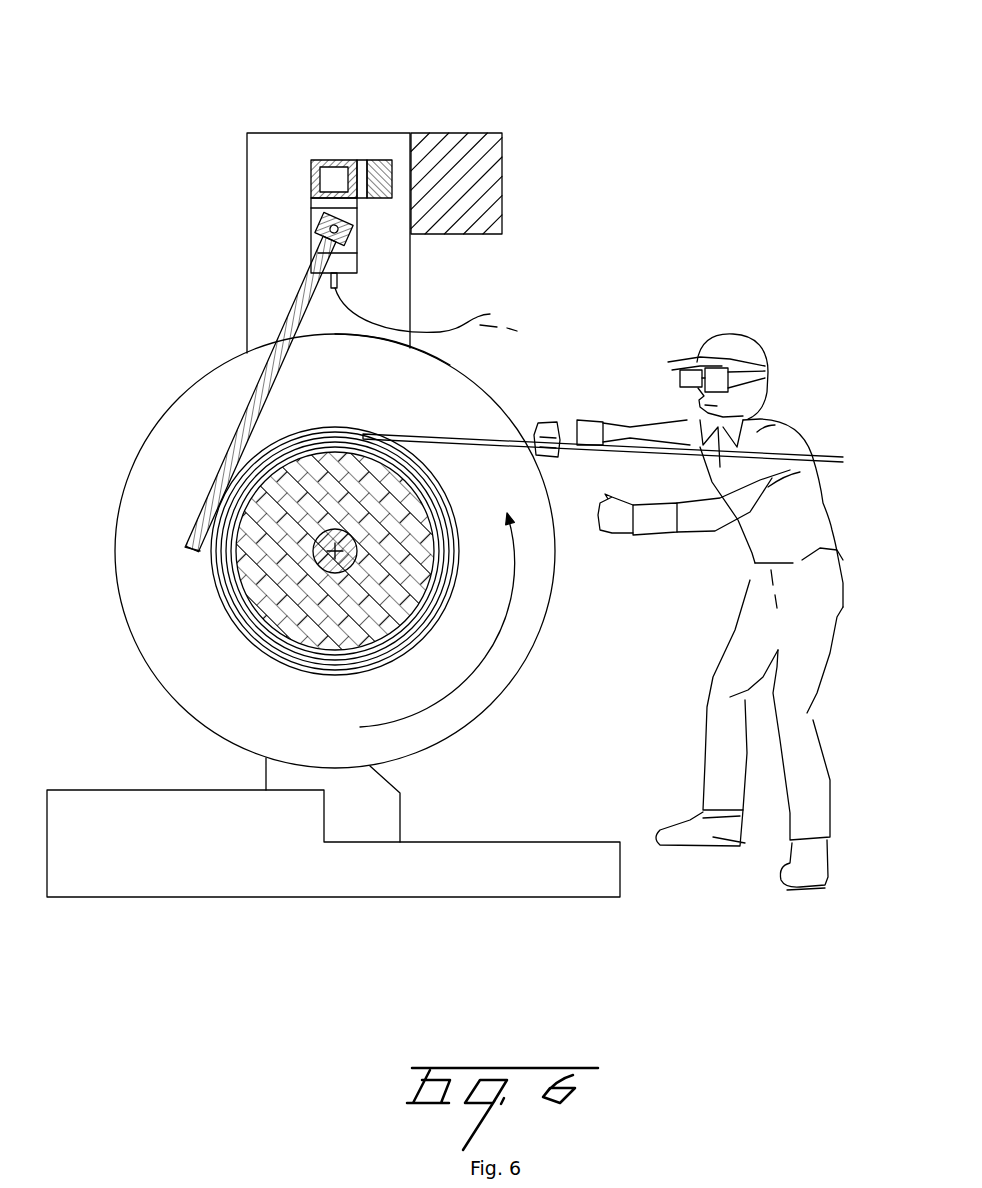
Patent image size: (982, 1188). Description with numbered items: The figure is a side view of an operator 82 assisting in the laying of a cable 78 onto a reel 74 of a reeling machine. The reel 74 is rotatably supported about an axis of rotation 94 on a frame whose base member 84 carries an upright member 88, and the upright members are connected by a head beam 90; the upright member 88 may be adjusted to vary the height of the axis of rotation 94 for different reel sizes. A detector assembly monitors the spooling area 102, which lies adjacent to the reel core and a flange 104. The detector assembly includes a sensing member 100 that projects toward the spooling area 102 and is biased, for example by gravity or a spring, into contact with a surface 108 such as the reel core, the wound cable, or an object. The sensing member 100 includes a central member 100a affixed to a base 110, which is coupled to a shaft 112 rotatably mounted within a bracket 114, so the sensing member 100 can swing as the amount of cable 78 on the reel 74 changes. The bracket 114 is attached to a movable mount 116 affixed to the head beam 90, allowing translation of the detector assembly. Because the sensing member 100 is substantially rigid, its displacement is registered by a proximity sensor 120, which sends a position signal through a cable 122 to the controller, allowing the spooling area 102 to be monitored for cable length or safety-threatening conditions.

The reel 74 is at (478, 723).
The cable 78 is at (478, 436).
The operator 82 is at (767, 428).
The base member 84 is at (263, 871).
The upright member 88 is at (256, 172).
The head beam 90 is at (492, 178).
The axis of rotation 94 is at (256, 620).
The sensing member 100 is at (261, 362).
The central member 100a is at (222, 451).
The spooling area 102 is at (401, 407).
The flange 104 is at (159, 629).
The surface 108 is at (204, 555).
The base 110 is at (342, 238).
The shaft 112 is at (345, 230).
The bracket 114 is at (310, 200).
The movable mount 116 is at (336, 160).
The proximity sensor 120 is at (338, 280).
The cable 122 is at (490, 314).